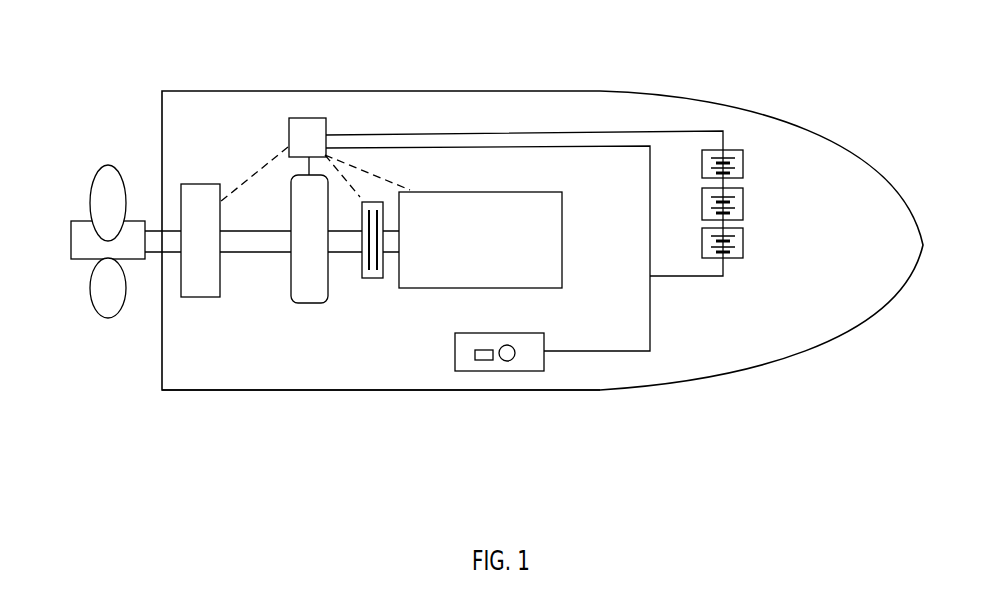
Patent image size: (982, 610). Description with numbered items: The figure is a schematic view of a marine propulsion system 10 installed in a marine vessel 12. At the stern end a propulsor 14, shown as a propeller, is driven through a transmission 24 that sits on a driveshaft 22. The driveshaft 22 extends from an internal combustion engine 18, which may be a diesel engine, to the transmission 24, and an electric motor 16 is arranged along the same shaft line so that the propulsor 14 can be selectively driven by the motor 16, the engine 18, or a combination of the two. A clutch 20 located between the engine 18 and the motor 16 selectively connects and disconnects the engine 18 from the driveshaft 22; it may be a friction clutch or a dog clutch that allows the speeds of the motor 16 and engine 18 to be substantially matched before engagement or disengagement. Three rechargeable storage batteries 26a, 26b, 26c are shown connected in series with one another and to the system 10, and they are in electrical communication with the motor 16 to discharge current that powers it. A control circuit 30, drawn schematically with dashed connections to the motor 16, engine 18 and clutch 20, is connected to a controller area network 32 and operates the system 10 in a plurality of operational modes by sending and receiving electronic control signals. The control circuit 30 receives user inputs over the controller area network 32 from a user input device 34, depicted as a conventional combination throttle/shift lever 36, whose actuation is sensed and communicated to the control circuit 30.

The marine propulsion system 10 is at (607, 366).
The marine vessel 12 is at (827, 112).
The propulsor 14 is at (80, 253).
The electric motor 16 is at (312, 295).
The internal combustion engine 18 is at (412, 275).
The clutch 20 is at (363, 269).
The driveshaft 22 is at (247, 243).
The transmission 24 is at (193, 283).
The rechargeable storage battery 26a is at (743, 160).
The rechargeable storage battery 26b is at (743, 200).
The rechargeable storage battery 26c is at (743, 240).
The control circuit 30 is at (303, 130).
The controller area network 32 is at (508, 127).
The user input device 34 is at (528, 363).
The combination throttle/shift lever 36 is at (483, 360).